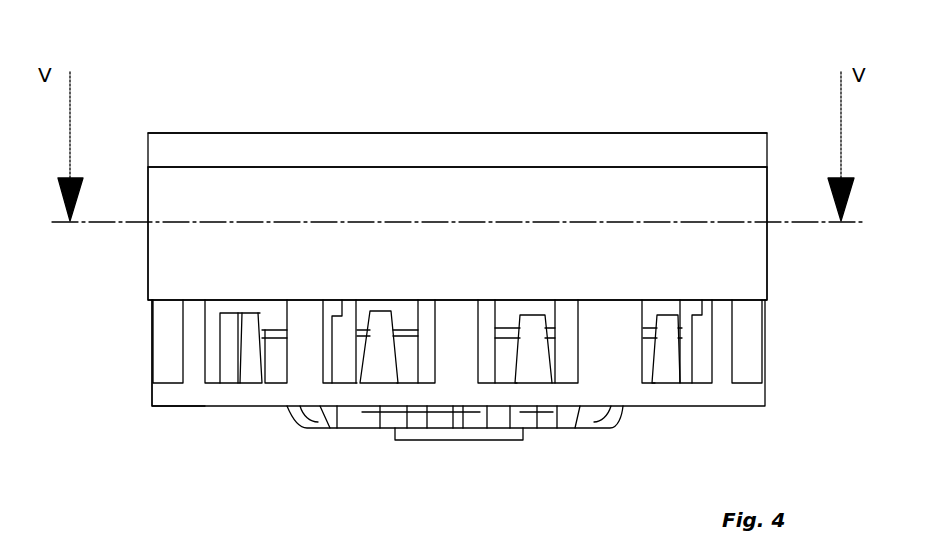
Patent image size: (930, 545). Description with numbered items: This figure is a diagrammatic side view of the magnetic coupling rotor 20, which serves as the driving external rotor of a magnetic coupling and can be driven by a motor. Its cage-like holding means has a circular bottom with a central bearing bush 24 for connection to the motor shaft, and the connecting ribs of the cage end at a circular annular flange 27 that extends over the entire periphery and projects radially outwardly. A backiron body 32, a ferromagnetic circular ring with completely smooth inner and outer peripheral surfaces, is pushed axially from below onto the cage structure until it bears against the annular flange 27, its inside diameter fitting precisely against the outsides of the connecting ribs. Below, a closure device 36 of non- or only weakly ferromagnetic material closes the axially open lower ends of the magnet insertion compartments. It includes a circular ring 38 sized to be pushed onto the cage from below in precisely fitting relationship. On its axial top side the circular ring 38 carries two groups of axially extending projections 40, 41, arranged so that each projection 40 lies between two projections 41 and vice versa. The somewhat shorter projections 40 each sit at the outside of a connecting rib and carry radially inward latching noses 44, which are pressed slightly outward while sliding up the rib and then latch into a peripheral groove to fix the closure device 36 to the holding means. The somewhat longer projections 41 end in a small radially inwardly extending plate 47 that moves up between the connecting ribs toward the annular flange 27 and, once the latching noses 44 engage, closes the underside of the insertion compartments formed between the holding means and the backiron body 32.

The magnetic coupling rotor 20 is at (230, 80).
The bearing bush 24 is at (458, 440).
The annular flange 27 is at (633, 138).
The backiron body 32 is at (195, 265).
The closure device 36 is at (710, 390).
The circular ring 38 is at (197, 390).
The projections 40 is at (253, 373).
The projections 41 is at (193, 331).
The latching noses 44 is at (268, 320).
The plate 47 is at (232, 314).